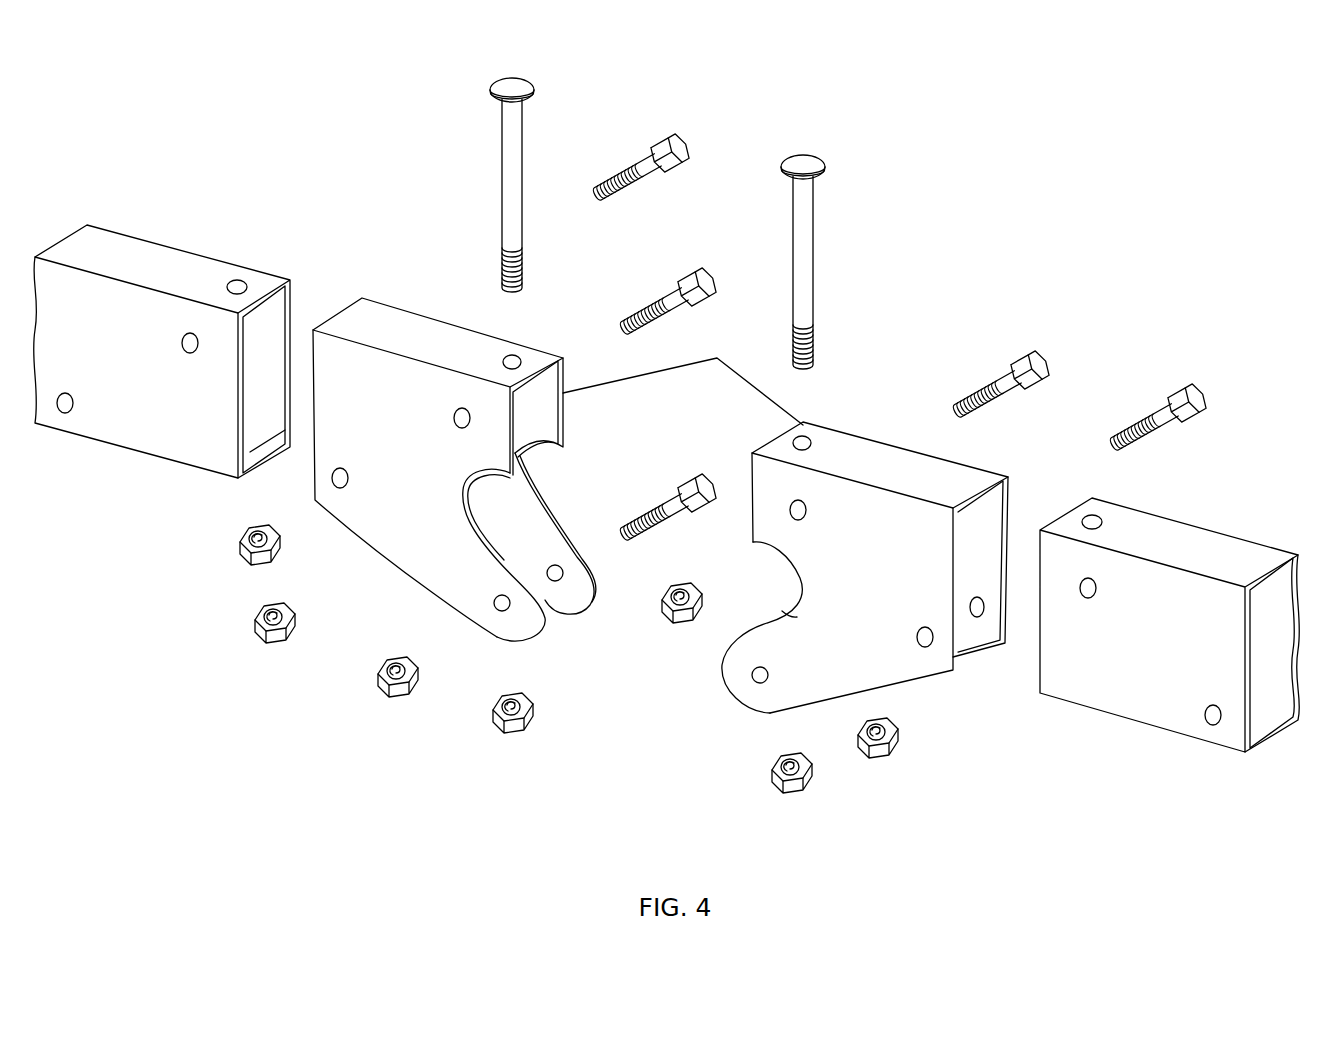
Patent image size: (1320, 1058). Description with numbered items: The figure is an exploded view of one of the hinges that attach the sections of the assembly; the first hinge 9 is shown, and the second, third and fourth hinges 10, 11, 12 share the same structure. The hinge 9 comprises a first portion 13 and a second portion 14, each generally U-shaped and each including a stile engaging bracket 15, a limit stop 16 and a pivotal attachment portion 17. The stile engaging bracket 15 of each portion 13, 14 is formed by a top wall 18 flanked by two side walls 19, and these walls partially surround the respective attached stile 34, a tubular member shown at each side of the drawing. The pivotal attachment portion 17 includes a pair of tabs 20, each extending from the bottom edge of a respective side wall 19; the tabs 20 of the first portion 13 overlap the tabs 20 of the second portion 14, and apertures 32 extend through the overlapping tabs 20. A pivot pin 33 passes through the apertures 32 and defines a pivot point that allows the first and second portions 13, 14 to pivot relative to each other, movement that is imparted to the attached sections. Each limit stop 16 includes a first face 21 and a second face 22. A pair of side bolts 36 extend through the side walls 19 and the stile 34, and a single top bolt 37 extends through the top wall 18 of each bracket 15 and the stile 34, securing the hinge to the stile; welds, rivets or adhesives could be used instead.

The first hinge 9 is at (262, 126).
The second hinge 10 is at (262, 126).
The third hinge 11 is at (262, 126).
The fourth hinge 12 is at (358, 190).
The first portion 13 is at (773, 840).
The second portion 14 is at (242, 727).
The stile engaging bracket 15 is at (591, 554).
The limit stop 16 is at (683, 375).
The pivotal attachment portion 17 is at (563, 587).
The top wall 18 is at (417, 354).
The side wall 19 is at (373, 419).
The tab 20 is at (527, 555).
The first face 21 is at (773, 435).
The second face 22 is at (543, 373).
The aperture 32 is at (557, 573).
The pivot pin 33 is at (662, 502).
The stile 34 is at (163, 458).
The side bolt 36 is at (715, 268).
The top bolt 37 is at (532, 80).